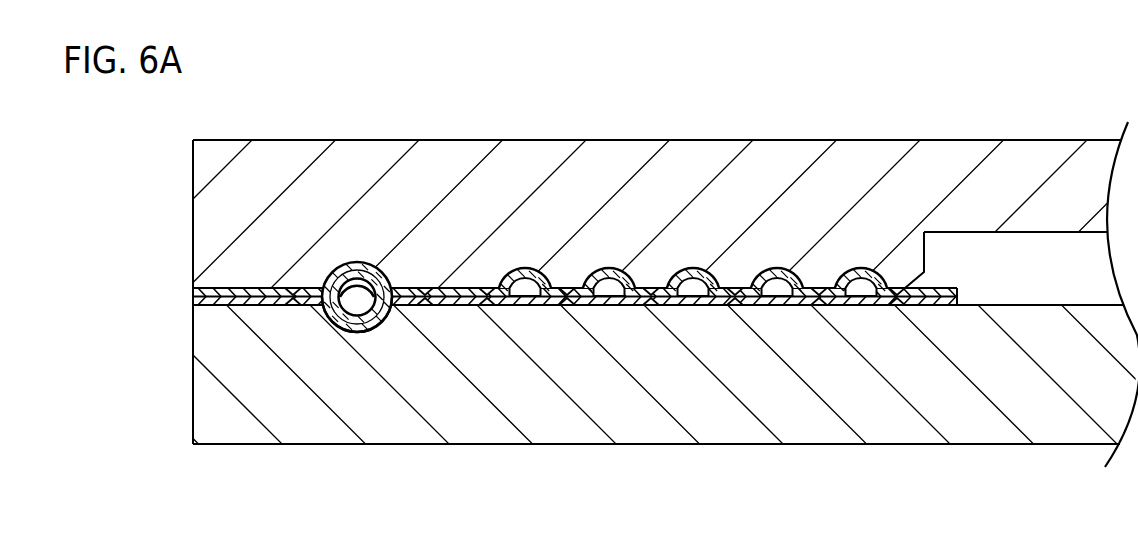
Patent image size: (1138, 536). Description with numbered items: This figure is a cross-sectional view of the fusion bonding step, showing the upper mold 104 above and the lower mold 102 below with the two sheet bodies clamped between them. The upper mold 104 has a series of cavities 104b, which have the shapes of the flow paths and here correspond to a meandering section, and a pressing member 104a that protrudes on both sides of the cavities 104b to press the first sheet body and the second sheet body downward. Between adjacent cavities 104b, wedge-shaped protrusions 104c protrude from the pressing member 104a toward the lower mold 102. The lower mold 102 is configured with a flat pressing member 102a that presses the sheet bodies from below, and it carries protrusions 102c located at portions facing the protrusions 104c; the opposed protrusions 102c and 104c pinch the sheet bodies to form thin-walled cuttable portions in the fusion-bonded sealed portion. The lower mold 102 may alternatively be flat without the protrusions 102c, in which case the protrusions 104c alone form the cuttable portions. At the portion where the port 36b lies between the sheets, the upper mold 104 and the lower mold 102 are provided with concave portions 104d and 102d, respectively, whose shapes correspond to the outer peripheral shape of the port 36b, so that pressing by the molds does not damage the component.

The upper mold 104 is at (1034, 160).
The pressing member 104a is at (827, 270).
The cavities 104b is at (975, 233).
The wedge-shaped protrusions 104c is at (897, 287).
The concave portion 104d is at (360, 280).
The port 36b is at (337, 267).
The lower mold 102 is at (997, 420).
The flat pressing member 102a is at (465, 328).
The protrusions 102c is at (899, 307).
The concave portion 102d is at (362, 330).